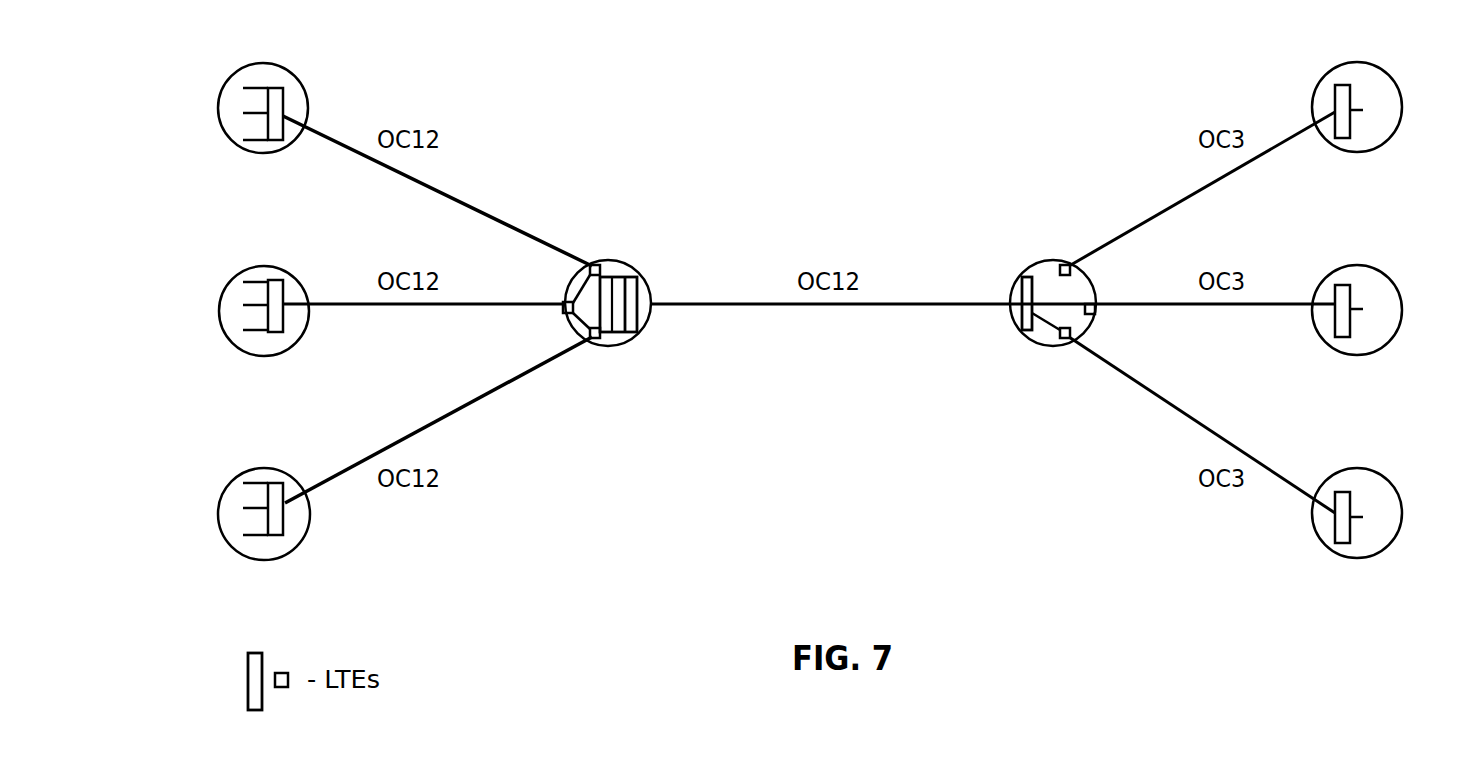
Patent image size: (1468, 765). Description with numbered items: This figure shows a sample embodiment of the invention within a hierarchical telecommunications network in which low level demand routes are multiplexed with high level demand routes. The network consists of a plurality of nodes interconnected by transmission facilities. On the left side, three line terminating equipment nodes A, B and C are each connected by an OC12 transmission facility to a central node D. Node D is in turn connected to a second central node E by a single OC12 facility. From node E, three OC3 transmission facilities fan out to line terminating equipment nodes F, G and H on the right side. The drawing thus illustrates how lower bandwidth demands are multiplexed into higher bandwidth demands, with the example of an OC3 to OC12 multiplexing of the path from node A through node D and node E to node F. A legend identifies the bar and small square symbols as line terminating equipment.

The node A is at (245, 108).
The node B is at (246, 311).
The node C is at (246, 514).
The node D is at (607, 280).
The node E is at (1053, 280).
The node F is at (1377, 107).
The node G is at (1379, 310).
The node H is at (1379, 513).